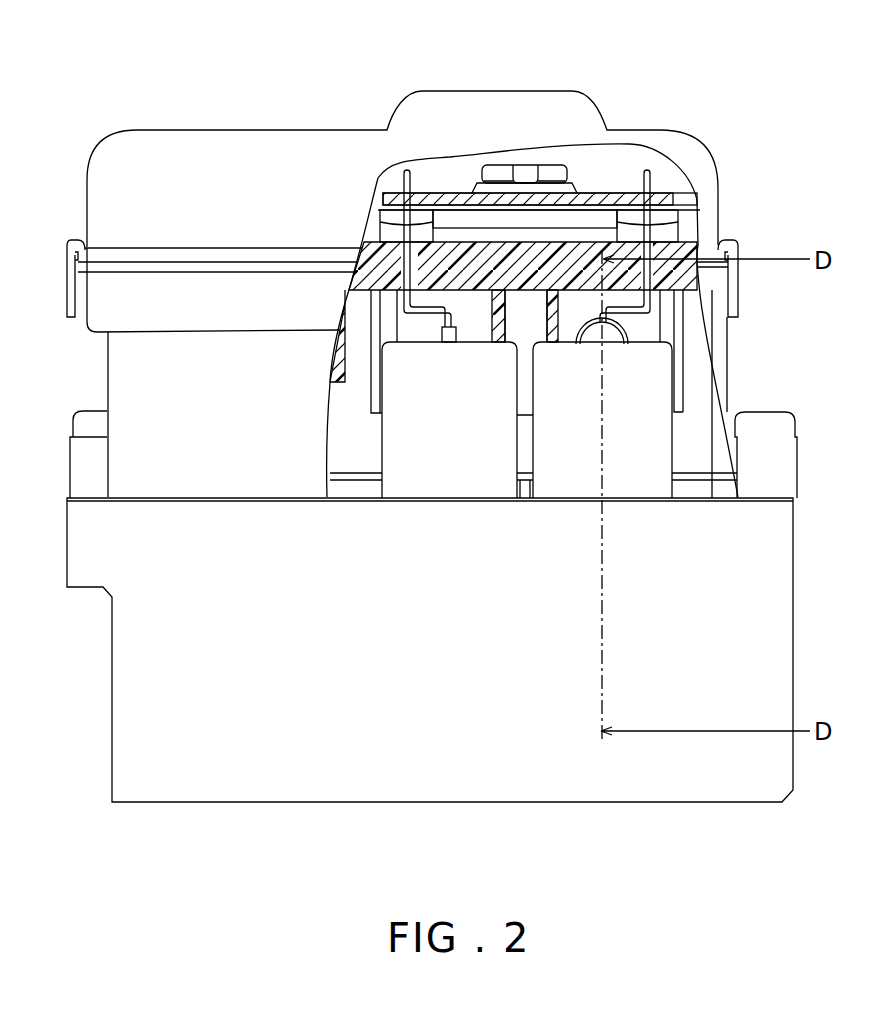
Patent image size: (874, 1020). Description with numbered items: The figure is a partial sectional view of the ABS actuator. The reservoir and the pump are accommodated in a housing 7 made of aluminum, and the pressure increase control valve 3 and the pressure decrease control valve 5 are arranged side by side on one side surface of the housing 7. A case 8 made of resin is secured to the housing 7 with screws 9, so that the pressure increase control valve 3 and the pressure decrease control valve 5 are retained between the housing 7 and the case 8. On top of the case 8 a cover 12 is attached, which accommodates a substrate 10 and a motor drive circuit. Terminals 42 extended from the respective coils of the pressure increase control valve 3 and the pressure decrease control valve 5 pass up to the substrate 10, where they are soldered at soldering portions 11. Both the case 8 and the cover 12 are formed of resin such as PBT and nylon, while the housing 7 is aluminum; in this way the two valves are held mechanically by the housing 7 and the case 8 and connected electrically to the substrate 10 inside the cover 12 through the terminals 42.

The pressure increase control valve 3 is at (648, 387).
The pressure decrease control valve 5 is at (410, 385).
The housing 7 is at (762, 638).
The case 8 is at (693, 250).
The screws 9 is at (83, 420).
The substrate 10 is at (607, 198).
The soldering portions 11 is at (652, 190).
The cover 12 is at (682, 148).
The terminals 42 is at (402, 173).